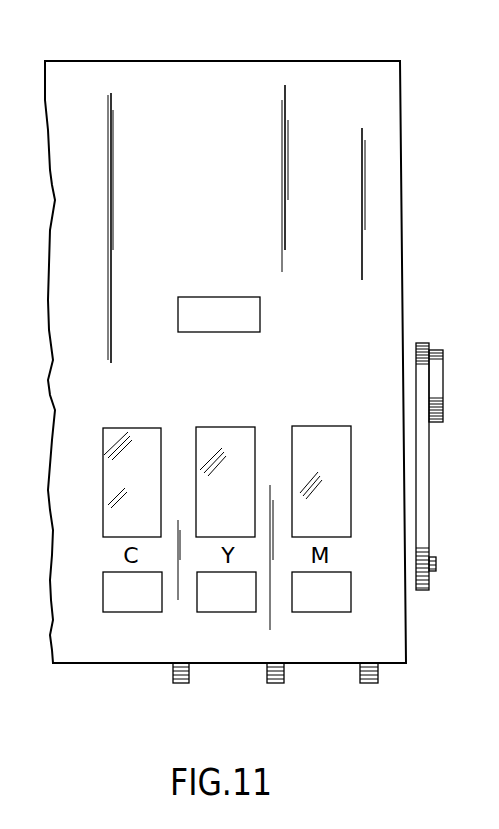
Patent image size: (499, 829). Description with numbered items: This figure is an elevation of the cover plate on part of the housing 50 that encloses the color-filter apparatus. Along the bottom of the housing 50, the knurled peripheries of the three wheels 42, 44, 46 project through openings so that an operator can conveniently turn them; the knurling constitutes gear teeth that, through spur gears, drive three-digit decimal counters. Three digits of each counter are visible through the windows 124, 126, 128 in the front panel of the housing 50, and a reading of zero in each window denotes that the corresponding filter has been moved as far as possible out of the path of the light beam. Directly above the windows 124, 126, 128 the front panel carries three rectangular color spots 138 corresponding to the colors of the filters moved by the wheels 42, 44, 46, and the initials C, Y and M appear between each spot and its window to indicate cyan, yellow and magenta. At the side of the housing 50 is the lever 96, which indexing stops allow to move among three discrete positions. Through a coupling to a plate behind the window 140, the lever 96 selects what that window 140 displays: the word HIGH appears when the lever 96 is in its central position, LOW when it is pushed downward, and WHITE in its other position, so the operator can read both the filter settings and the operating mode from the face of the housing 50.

The housing 50 is at (383, 109).
The window 140 is at (260, 318).
The rectangular color spots 138 is at (307, 430).
The window 124 is at (122, 600).
The window 126 is at (224, 600).
The window 128 is at (322, 600).
The wheel 42 is at (172, 677).
The wheel 44 is at (267, 681).
The wheel 46 is at (378, 677).
The lever 96 is at (427, 490).